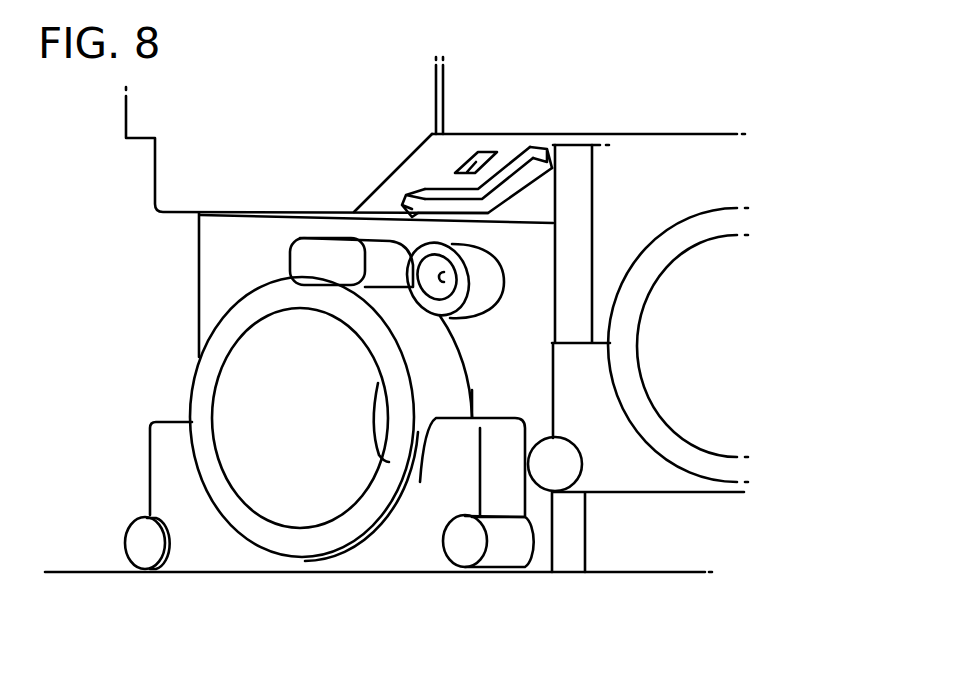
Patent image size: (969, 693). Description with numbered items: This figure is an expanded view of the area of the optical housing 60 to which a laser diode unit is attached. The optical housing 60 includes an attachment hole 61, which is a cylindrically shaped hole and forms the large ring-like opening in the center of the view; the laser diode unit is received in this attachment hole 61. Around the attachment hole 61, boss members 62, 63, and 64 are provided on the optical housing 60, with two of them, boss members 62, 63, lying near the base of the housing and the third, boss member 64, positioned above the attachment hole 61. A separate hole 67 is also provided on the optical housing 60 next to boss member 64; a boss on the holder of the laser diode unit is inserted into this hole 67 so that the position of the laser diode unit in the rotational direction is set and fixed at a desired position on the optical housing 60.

The optical housing 60 is at (654, 148).
The attachment hole 61 is at (228, 390).
The boss member 62 is at (143, 565).
The boss member 63 is at (465, 562).
The boss member 64 is at (298, 257).
The hole 67 is at (443, 273).